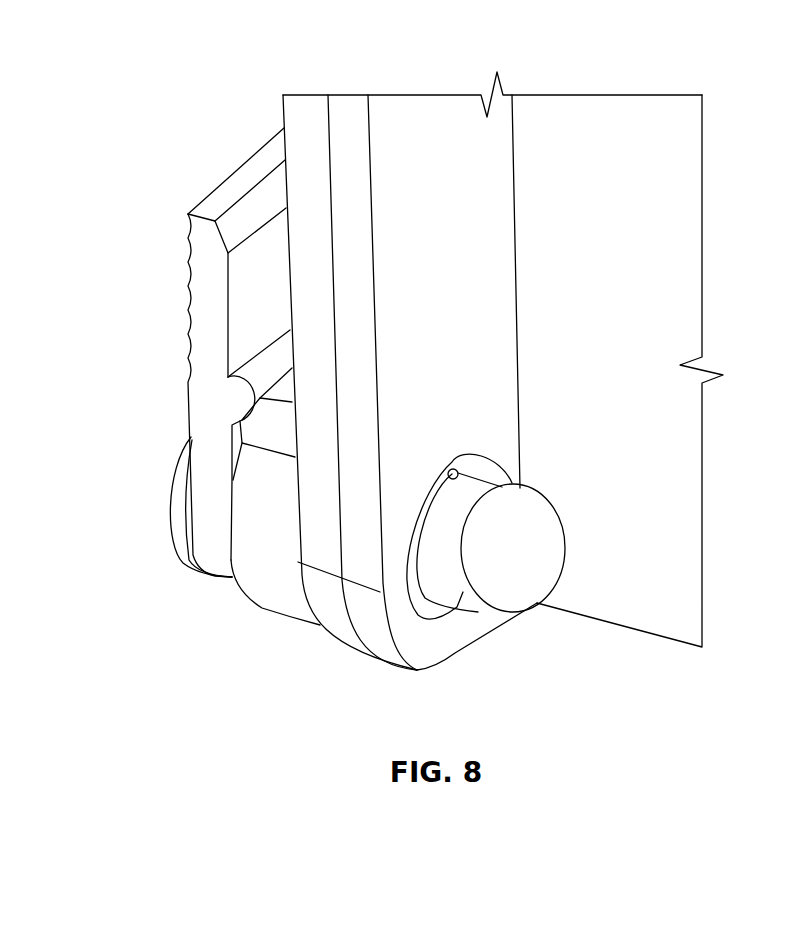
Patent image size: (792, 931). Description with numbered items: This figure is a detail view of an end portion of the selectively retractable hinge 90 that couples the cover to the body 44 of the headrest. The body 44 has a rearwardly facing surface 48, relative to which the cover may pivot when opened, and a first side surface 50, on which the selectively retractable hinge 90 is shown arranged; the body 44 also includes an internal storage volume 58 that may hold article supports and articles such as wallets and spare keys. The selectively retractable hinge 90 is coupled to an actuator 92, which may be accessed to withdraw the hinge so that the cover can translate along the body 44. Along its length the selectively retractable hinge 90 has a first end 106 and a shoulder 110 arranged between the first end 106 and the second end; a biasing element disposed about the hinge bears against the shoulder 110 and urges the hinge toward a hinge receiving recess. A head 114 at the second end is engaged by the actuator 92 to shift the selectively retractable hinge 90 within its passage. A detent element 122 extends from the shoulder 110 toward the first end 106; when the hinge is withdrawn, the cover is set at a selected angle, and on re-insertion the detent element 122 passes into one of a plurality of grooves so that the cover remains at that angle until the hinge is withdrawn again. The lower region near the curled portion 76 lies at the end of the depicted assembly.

The body 44 is at (283, 130).
The rearwardly facing surface 48 is at (303, 107).
The first side surface 50 is at (282, 116).
The internal storage volume 58 is at (672, 250).
The curled lower flange 76 is at (467, 648).
The selectively retractable hinge 90 is at (171, 449).
The actuator 92 is at (205, 250).
The first end 106 is at (540, 533).
The shoulder 110 is at (422, 503).
The head 114 is at (183, 550).
The detent element 122 is at (450, 468).